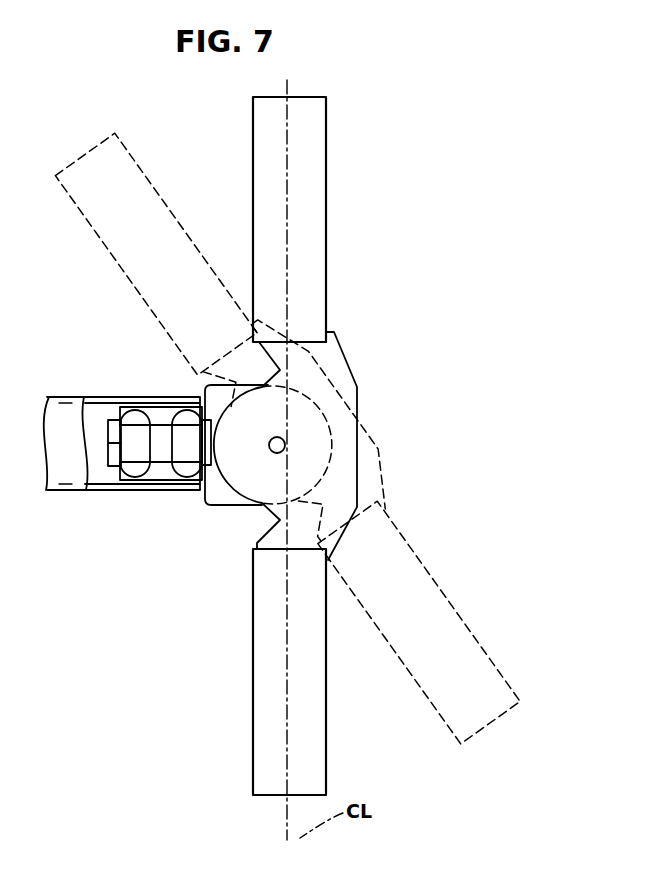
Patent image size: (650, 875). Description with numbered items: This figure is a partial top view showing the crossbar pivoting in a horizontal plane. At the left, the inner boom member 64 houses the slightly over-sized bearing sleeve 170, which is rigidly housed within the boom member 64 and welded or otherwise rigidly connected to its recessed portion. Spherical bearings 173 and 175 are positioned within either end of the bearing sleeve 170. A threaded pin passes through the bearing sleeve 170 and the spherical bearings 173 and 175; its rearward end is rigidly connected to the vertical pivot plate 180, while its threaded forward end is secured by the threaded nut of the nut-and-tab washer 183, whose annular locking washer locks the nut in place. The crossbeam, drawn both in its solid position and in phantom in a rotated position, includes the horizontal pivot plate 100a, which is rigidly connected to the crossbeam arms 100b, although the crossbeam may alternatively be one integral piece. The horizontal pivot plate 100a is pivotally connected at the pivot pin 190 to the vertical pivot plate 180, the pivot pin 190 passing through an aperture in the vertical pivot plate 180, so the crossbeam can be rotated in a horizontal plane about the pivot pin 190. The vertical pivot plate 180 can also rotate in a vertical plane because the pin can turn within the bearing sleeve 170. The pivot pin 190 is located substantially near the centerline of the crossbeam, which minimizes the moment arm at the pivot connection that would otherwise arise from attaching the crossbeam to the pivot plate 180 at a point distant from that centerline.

The inner boom member 64 is at (81, 500).
The horizontal pivot plate 100a is at (346, 366).
The crossbeam arms 100b is at (316, 219).
The bearing sleeve 170 is at (160, 407).
The spherical bearing 173 is at (145, 450).
The spherical bearing 175 is at (192, 450).
The vertical pivot plate 180 is at (228, 386).
The nut-and-tab washer 183 is at (113, 425).
The pivot pin 190 is at (360, 455).